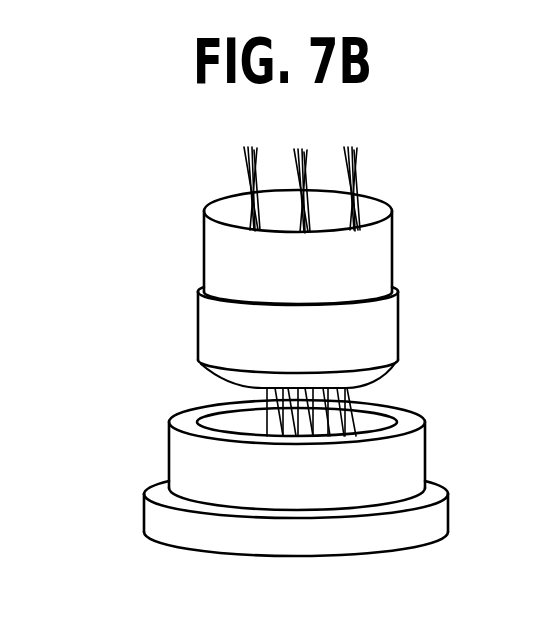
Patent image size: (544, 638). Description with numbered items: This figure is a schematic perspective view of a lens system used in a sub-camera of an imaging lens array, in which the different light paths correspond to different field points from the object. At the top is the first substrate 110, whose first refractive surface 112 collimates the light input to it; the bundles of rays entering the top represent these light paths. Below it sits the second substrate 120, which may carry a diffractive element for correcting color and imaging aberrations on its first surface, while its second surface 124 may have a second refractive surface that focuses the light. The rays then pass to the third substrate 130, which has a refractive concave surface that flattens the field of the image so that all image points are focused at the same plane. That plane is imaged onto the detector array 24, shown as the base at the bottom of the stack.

The first refractive surface 112 is at (388, 209).
The first substrate 110 is at (393, 243).
The second substrate 120 is at (398, 310).
The second surface 124 is at (387, 372).
The third substrate 130 is at (425, 425).
The detector array 24 is at (450, 503).